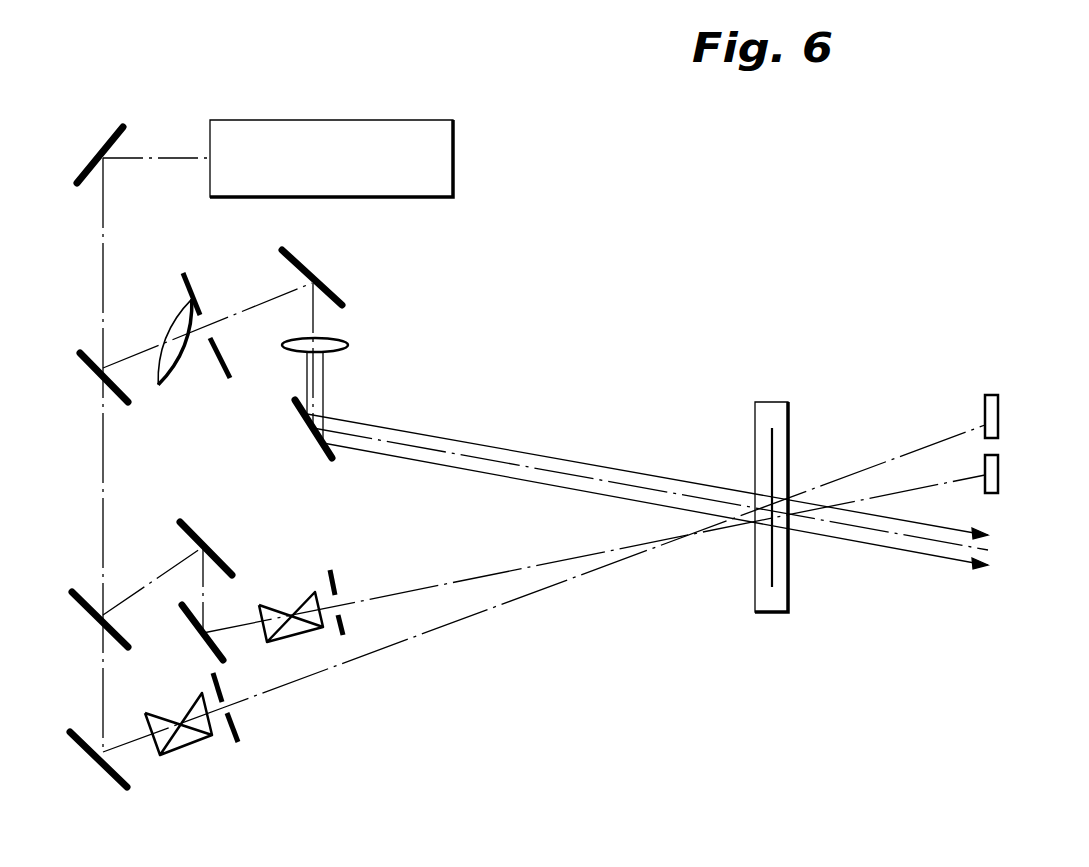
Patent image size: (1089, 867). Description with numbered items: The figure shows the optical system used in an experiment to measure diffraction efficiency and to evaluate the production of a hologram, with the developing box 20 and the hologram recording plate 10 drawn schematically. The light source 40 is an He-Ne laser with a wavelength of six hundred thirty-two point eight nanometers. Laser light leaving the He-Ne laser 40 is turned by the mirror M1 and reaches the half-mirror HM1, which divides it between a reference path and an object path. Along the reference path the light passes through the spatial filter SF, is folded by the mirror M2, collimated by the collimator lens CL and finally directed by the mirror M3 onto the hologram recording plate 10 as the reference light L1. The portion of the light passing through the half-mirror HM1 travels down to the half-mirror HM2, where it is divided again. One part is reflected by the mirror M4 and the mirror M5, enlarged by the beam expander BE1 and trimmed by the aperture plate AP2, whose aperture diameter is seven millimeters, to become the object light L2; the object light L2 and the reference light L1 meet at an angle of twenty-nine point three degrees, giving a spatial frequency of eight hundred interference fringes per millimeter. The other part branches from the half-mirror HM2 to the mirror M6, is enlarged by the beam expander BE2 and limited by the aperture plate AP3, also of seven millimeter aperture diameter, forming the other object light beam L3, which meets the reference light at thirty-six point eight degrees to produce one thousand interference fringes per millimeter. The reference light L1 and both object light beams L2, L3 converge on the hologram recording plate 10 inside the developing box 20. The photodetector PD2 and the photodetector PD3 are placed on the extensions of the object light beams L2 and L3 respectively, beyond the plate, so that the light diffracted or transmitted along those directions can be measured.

The light source 40 is at (400, 122).
The developing box 20 is at (790, 413).
The hologram recording plate 10 is at (772, 465).
The mirror M1 is at (95, 153).
The mirror M2 is at (319, 277).
The mirror M3 is at (304, 435).
The mirror M4 is at (208, 543).
The mirror M5 is at (193, 639).
The mirror M6 is at (90, 764).
The half-mirror HM1 is at (85, 378).
The half-mirror HM2 is at (82, 619).
The spatial filter SF is at (207, 333).
The collimator lens CL is at (336, 347).
The reference light L1 is at (573, 460).
The object light L2 is at (462, 582).
The other object light beam L3 is at (520, 595).
The beam expander BE1 is at (291, 607).
The beam expander BE2 is at (184, 739).
The aperture plate AP2 is at (357, 592).
The aperture plate AP3 is at (251, 712).
The photodetector PD2 is at (1020, 479).
The photodetector PD3 is at (1020, 416).